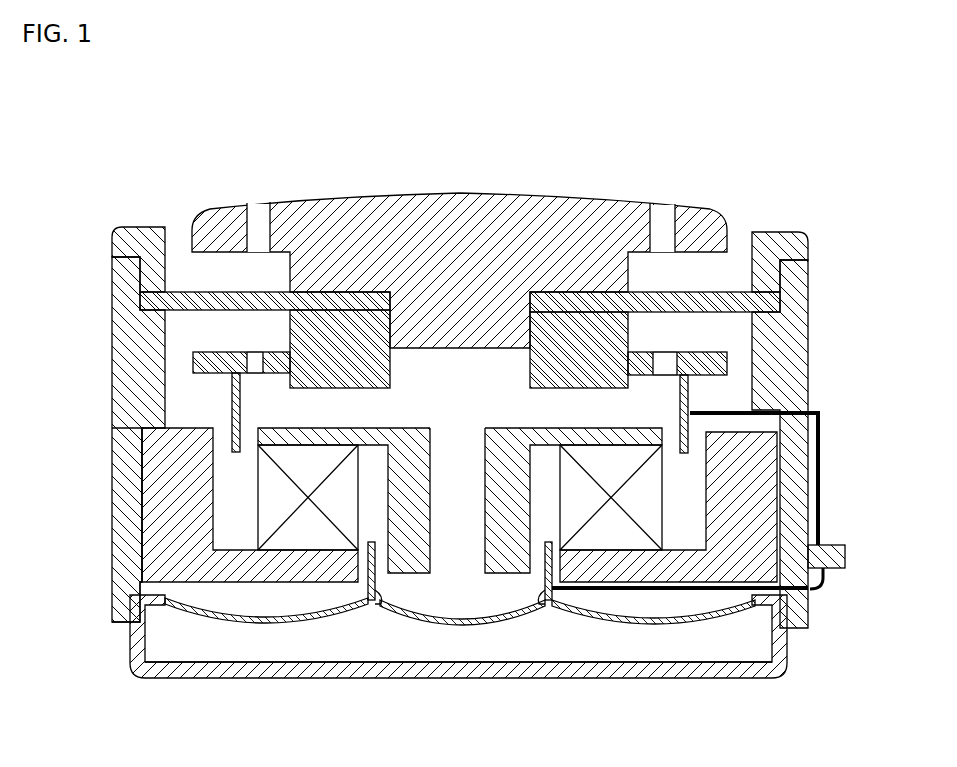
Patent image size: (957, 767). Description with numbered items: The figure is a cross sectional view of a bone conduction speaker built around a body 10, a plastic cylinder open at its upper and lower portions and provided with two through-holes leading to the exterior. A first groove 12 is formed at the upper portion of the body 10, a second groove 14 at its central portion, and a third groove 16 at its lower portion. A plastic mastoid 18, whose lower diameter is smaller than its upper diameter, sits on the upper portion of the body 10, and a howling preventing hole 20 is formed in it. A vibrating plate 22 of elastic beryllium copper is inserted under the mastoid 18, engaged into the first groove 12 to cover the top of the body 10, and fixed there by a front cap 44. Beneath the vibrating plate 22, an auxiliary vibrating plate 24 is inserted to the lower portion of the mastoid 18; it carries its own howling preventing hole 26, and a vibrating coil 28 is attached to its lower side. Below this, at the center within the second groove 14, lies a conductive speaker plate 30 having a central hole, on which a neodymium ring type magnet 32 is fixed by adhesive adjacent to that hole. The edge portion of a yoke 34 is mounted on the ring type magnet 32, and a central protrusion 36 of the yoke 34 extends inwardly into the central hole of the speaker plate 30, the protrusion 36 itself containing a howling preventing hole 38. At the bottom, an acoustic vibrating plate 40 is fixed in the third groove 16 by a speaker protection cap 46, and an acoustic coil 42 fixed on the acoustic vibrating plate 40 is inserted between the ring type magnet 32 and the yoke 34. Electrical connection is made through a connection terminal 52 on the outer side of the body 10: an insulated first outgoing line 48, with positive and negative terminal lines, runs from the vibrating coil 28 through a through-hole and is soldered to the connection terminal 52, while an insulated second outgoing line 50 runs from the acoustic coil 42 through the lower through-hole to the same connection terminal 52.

The body 10 is at (143, 378).
The first groove 12 is at (147, 232).
The second groove 14 is at (143, 525).
The third groove 16 is at (130, 640).
The mastoid 18 is at (634, 197).
The howling preventing hole 20 is at (255, 215).
The vibrating plate 22 is at (175, 298).
The auxiliary vibrating plate 24 is at (527, 372).
The howling preventing hole 26 is at (257, 352).
The vibrating coil 28 is at (233, 410).
The speaker plate 30 is at (173, 548).
The ring type magnet 32 is at (291, 472).
The yoke 34 is at (503, 582).
The protrusion 36 is at (508, 548).
The howling preventing hole 38 is at (432, 548).
The acoustic vibrating plate 40 is at (238, 612).
The acoustic coil 42 is at (382, 608).
The front cap 44 is at (770, 232).
The speaker protection cap 46 is at (143, 668).
The first outgoing line 48 is at (821, 460).
The second outgoing line 50 is at (826, 586).
The connection terminal 52 is at (847, 556).